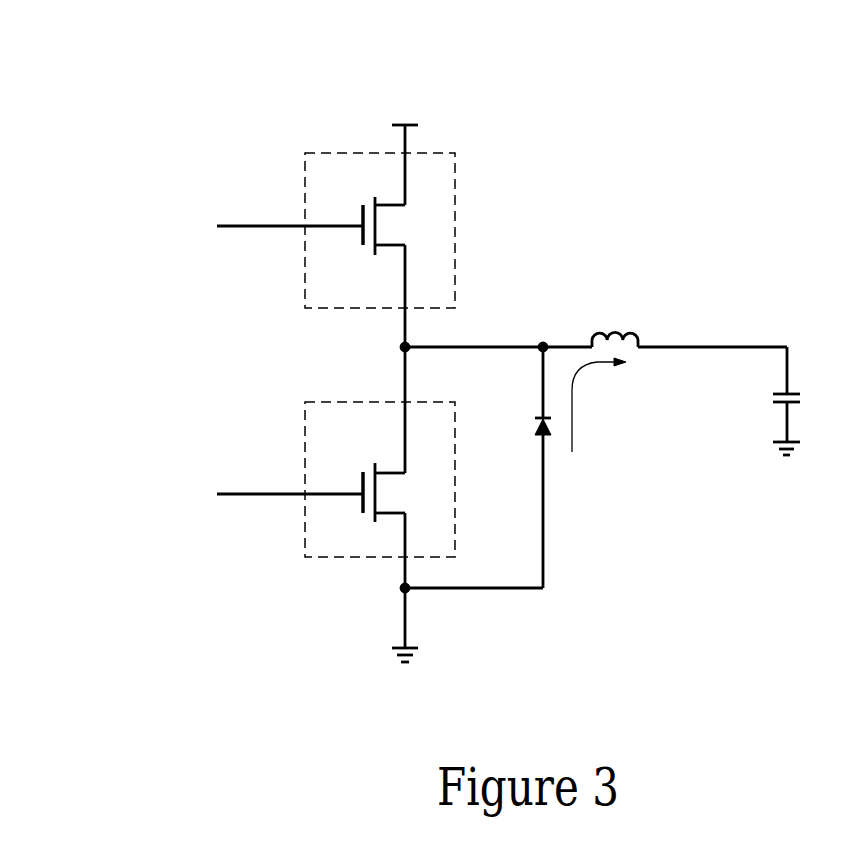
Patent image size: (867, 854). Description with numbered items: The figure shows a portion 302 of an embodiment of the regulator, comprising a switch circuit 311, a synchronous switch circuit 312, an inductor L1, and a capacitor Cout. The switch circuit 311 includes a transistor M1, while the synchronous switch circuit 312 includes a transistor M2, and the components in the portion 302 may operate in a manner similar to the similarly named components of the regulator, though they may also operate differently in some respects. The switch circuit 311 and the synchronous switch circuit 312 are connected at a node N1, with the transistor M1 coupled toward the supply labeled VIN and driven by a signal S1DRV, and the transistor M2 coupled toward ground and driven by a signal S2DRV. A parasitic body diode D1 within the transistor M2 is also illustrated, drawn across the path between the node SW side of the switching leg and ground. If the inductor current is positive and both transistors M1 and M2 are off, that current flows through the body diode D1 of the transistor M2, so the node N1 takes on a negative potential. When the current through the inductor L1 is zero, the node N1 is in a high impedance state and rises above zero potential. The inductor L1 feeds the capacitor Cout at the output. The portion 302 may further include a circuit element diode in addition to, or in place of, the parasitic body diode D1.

The portion 302 is at (494, 38).
The switch circuit 311 is at (325, 298).
The synchronous switch circuit 312 is at (330, 428).
The transistor M1 is at (369, 216).
The transistor M2 is at (368, 487).
The node N1 is at (402, 349).
The switch node SW is at (545, 334).
The parasitic body diode D1 is at (527, 467).
The inductor L1 is at (615, 324).
The capacitor Cout is at (809, 401).
The input voltage VIN is at (404, 152).
The switch 1 drive signal S1DRV is at (254, 226).
The switch 2 drive signal S2DRV is at (254, 496).